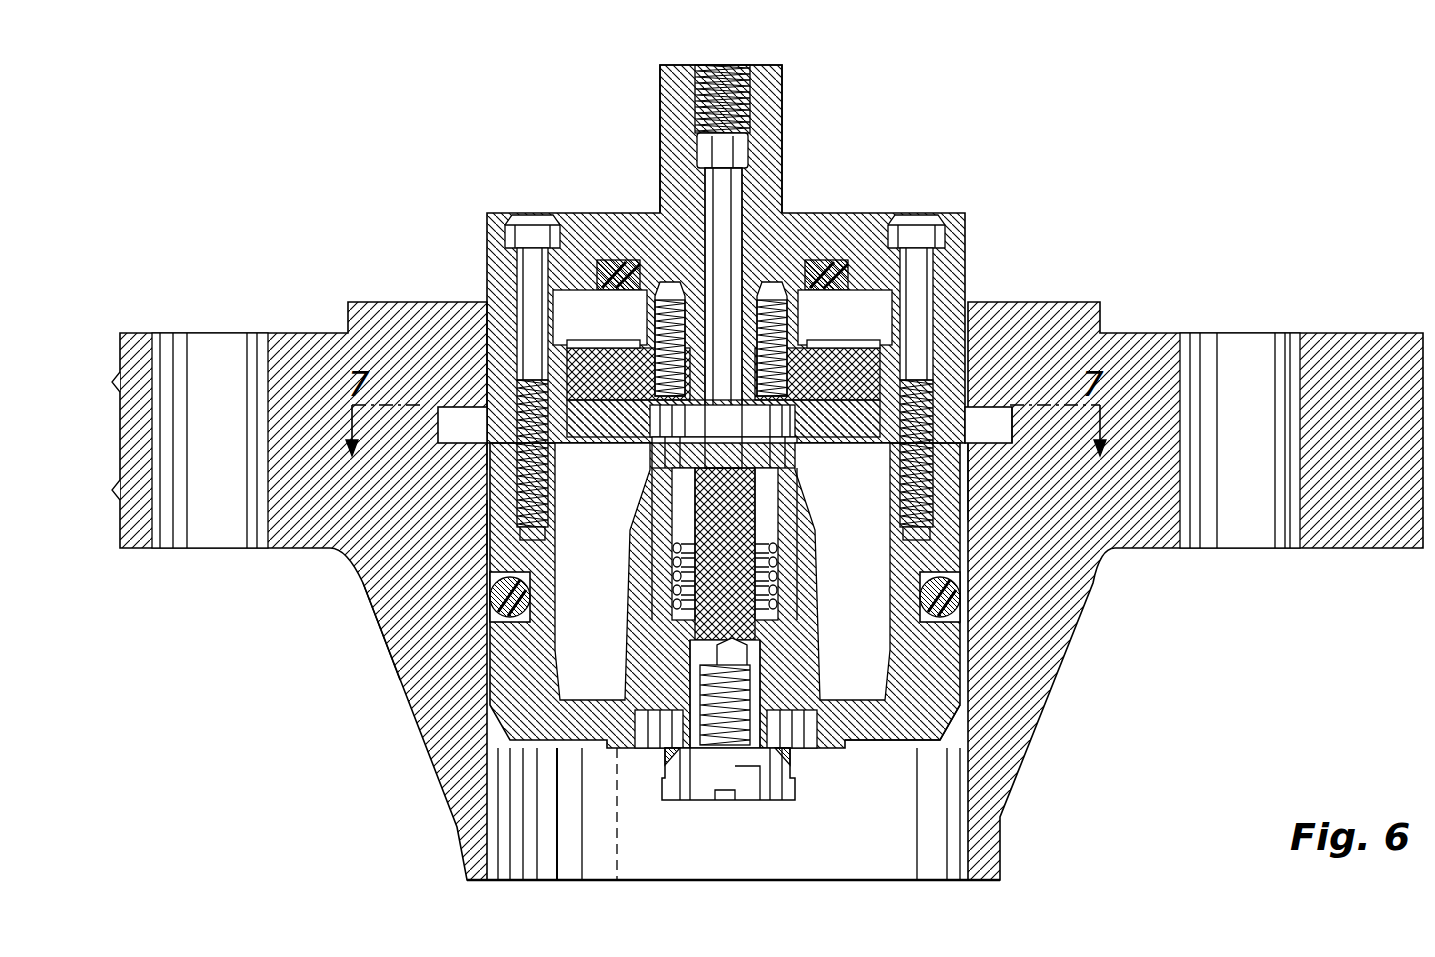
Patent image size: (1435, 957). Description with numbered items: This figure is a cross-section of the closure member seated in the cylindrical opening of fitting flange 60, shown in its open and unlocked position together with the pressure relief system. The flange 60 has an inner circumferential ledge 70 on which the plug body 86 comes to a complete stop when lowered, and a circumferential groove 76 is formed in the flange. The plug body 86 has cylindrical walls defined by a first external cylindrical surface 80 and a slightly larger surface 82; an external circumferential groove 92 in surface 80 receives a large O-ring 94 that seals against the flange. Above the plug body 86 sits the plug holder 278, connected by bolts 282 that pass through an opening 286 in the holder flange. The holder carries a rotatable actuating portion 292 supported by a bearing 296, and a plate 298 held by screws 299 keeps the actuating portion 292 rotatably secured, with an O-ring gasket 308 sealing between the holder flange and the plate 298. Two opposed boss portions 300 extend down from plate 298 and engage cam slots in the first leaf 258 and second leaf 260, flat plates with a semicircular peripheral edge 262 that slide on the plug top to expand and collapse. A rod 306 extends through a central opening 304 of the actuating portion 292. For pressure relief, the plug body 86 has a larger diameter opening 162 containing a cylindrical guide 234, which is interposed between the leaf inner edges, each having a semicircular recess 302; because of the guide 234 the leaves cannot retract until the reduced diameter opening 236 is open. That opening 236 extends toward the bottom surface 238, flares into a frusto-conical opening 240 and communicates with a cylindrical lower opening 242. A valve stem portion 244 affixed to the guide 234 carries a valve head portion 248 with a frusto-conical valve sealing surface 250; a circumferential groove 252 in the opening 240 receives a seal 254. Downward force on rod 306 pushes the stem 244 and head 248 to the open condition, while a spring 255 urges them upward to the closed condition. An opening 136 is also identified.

The flange 60 is at (1337, 331).
The circumferential ledge 70 is at (975, 480).
The circumferential groove 76 is at (985, 455).
The cylindrical surface 80 is at (487, 531).
The cylindrical surface 82 is at (460, 473).
The plug body 86 is at (456, 548).
The circumferential groove 92 is at (490, 576).
The O-ring 94 is at (490, 612).
The opening 136 is at (966, 226).
The opening 162 is at (648, 490).
The cylindrical guide 234 is at (795, 521).
The reduced diameter opening 236 is at (660, 638).
The bottom surface 238 is at (838, 750).
The frusto-conical opening 240 is at (645, 750).
The cylindrical lower opening 242 is at (805, 740).
The stem portion 244 is at (690, 655).
The valve head portion 248 is at (670, 800).
The frusto-conical valve sealing surface 250 is at (727, 766).
The circumferential groove 252 is at (785, 768).
The seal 254 is at (760, 770).
The spring 255 is at (795, 572).
The first leaf 258 is at (465, 405).
The second leaf 260 is at (985, 395).
The semicircular peripheral edge 262 is at (1002, 434).
The plug holder 278 is at (826, 148).
The bolts 282 is at (528, 222).
The opening 286 is at (505, 228).
The rotatable actuating portion 292 is at (785, 112).
The bearing 296 is at (826, 268).
The plate 298 is at (840, 350).
The screws 299 is at (670, 300).
The boss portions 300 is at (603, 447).
The semicircular recess 302 is at (815, 462).
The central opening 304 is at (672, 100).
The rod 306 is at (712, 150).
The O-ring gasket 308 is at (627, 342).